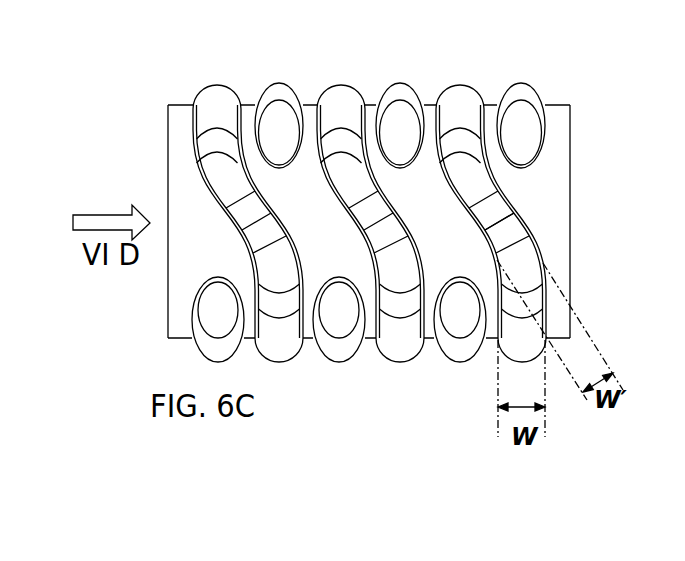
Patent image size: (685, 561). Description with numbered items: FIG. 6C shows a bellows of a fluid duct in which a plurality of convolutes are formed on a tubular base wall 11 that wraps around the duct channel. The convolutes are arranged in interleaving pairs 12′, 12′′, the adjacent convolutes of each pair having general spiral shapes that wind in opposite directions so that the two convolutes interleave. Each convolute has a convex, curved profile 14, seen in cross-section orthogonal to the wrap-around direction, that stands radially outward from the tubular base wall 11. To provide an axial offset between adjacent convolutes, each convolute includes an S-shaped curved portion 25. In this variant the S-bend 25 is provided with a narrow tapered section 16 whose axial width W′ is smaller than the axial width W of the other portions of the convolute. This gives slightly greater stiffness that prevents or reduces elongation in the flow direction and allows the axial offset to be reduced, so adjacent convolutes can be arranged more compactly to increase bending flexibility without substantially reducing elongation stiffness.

The tubular base wall 11 is at (562, 102).
The convolute of interleaving pair 12′ is at (525, 73).
The convolute of interleaving pair 12′′ is at (404, 191).
The profile 14 is at (518, 82).
The narrow tapered section 16 is at (497, 203).
The S-shaped curved portion 25 is at (505, 192).